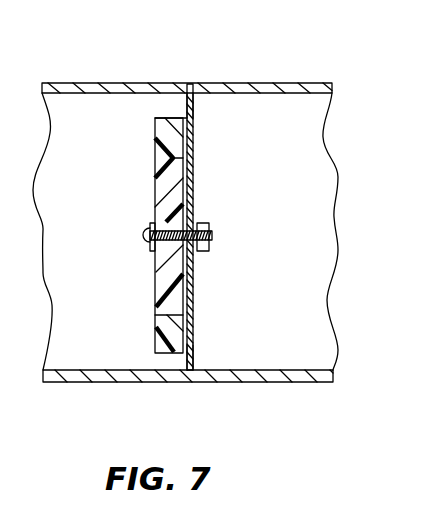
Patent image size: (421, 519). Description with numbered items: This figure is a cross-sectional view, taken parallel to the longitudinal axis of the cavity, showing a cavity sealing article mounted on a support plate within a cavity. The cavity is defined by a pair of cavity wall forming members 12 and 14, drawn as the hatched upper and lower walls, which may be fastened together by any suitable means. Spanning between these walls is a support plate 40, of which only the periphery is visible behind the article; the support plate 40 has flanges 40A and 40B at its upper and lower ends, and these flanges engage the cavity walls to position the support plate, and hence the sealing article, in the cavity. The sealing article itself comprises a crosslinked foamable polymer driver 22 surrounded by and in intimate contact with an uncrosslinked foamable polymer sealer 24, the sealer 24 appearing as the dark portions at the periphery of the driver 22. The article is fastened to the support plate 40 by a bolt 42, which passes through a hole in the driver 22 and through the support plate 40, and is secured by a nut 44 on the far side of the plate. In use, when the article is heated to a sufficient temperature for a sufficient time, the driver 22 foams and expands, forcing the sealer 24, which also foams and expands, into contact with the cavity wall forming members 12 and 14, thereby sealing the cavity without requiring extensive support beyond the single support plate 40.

The cavity wall forming member 12 is at (165, 90).
The cavity wall forming member 14 is at (80, 377).
The crosslinked foamable polymer driver 22 is at (155, 190).
The uncrosslinked foamable polymer sealer 24 is at (163, 130).
The support plate 40 is at (194, 148).
The flange 40A is at (194, 103).
The flange 40B is at (195, 363).
The bolt 42 is at (143, 236).
The nut 44 is at (210, 247).